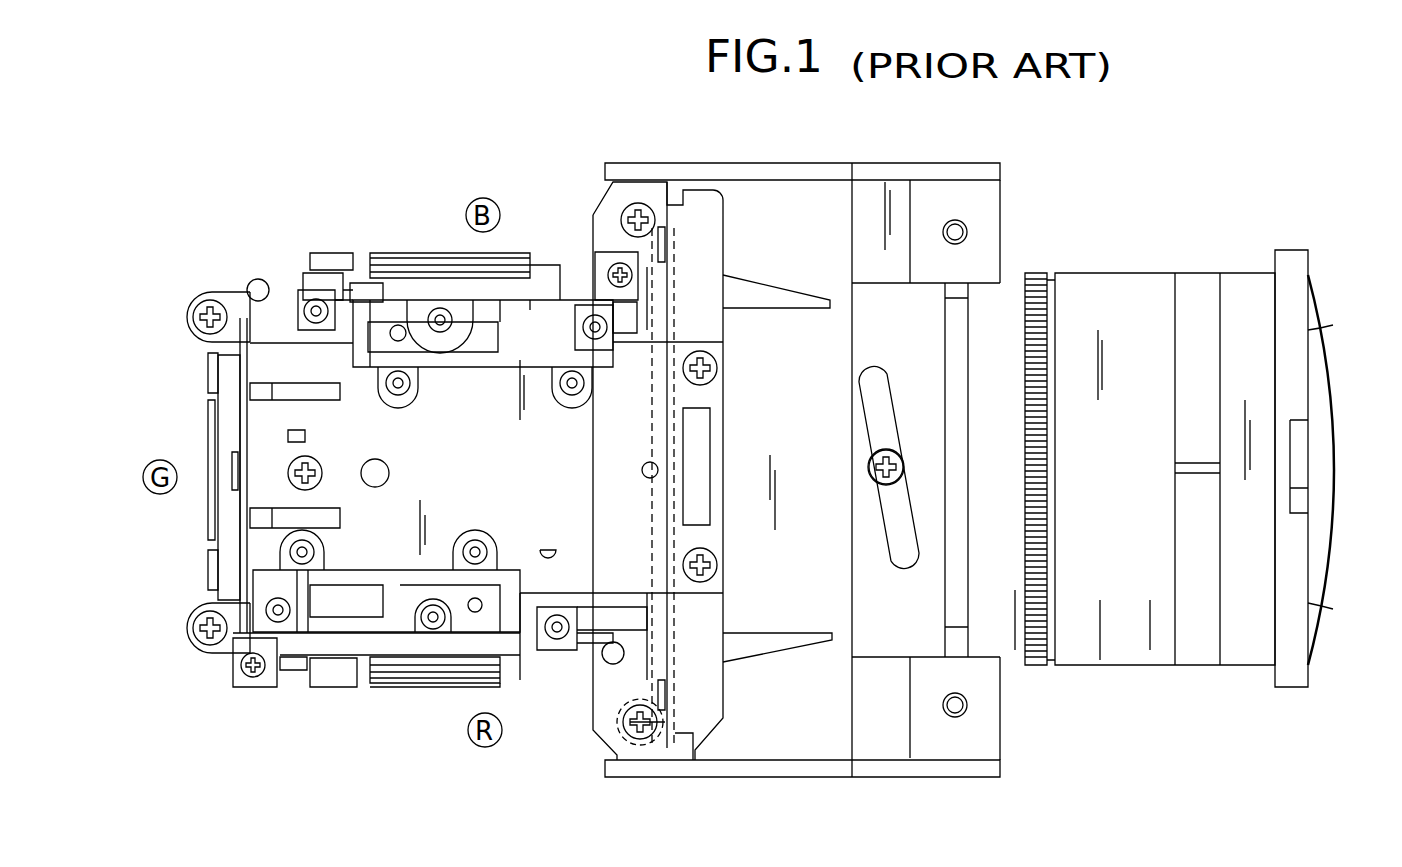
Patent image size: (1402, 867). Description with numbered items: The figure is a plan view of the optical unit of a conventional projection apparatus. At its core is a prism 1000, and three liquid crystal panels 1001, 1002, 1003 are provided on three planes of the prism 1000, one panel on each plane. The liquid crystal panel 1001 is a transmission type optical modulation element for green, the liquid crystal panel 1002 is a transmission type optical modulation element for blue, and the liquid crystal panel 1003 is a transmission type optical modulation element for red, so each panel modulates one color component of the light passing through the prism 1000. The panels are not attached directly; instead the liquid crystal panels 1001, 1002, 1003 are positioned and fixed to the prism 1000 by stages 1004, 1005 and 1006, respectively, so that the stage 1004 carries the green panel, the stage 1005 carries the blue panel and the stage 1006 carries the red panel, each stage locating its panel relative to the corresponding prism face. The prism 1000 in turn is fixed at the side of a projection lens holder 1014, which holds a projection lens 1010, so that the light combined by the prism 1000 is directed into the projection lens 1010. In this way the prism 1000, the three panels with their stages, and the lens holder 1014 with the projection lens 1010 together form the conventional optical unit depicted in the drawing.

The prism 1000 is at (348, 550).
The liquid crystal panel 1001 is at (228, 520).
The liquid crystal panel 1002 is at (395, 293).
The liquid crystal panel 1003 is at (350, 650).
The stage 1004 is at (208, 418).
The stage 1005 is at (440, 253).
The stage 1006 is at (415, 690).
The projection lens 1010 is at (1118, 273).
The projection lens holder 1014 is at (676, 780).